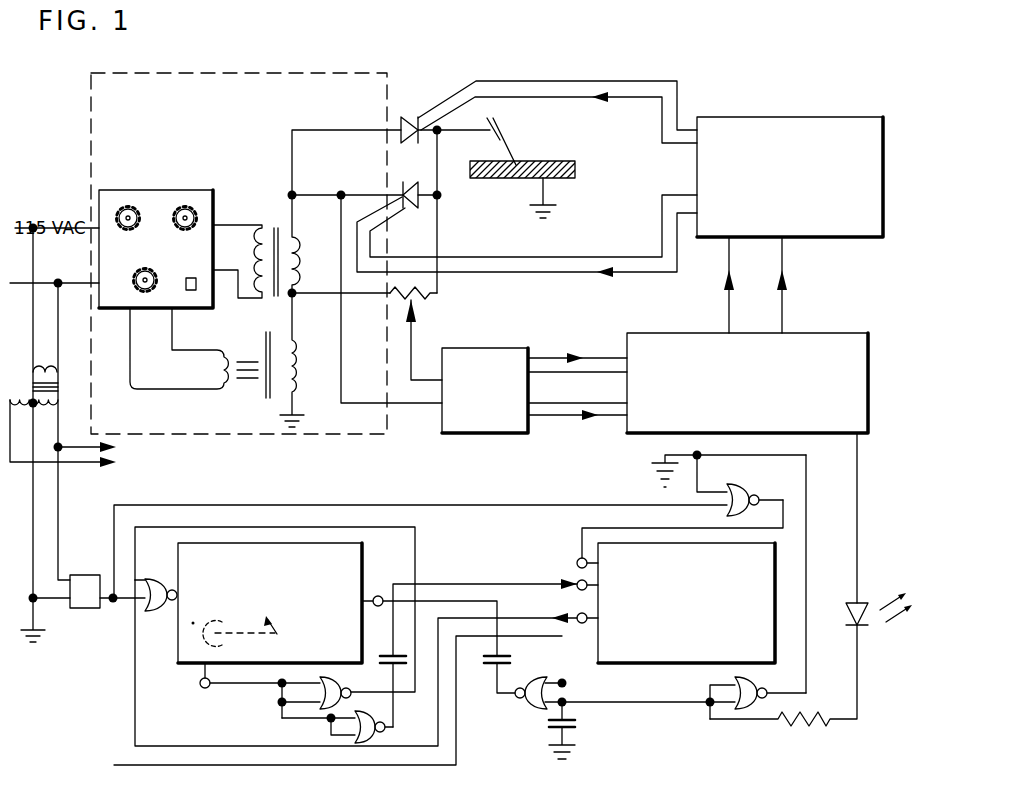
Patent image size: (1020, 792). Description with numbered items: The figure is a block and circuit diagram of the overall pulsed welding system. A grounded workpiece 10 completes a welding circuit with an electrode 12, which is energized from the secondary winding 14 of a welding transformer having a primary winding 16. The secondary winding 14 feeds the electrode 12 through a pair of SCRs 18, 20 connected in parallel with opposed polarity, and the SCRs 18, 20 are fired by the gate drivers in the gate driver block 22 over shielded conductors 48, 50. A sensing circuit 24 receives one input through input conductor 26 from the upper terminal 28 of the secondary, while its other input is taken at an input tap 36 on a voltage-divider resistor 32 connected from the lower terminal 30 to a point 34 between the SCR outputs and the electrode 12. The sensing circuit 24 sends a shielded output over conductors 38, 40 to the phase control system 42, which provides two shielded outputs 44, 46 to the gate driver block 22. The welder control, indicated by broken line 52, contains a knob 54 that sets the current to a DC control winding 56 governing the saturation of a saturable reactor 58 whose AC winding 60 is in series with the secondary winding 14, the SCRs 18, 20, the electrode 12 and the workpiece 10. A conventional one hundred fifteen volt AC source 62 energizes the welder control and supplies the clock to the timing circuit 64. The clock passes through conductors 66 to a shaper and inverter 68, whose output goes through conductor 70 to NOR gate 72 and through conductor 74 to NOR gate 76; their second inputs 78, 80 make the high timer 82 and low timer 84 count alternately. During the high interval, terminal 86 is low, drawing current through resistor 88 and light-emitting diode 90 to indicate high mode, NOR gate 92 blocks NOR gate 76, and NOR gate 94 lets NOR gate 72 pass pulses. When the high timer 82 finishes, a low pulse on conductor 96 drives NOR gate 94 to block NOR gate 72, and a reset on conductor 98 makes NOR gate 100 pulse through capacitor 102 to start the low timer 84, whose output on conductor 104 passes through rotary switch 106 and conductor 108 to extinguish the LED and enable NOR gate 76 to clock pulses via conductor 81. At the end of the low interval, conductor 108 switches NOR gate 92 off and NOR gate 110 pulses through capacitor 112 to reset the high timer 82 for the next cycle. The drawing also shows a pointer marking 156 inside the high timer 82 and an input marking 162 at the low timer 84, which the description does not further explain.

The workpiece 10 is at (560, 161).
The electrode 12 is at (512, 150).
The secondary winding 14 is at (292, 252).
The primary winding 16 is at (270, 228).
The SCR 18 is at (406, 117).
The SCR 20 is at (406, 190).
The gate driver block 22 is at (812, 123).
The sensing circuit 24 is at (492, 350).
The input conductor 26 is at (343, 388).
The upper terminal 28 is at (295, 190).
The lower terminal 30 is at (294, 297).
The resistor 32 is at (432, 298).
The point 34 is at (440, 135).
The input tap 36 is at (412, 348).
The conductor 38 is at (603, 356).
The conductor 40 is at (545, 422).
The phase control system 42 is at (852, 333).
The shielded output 44 is at (733, 303).
The shielded output 46 is at (790, 304).
The shielded conductor 48 is at (530, 95).
The shielded conductor 50 is at (523, 276).
The welder control 52 is at (240, 73).
The knob 54 is at (146, 278).
The DC control winding 56 is at (216, 356).
The saturable reactor 58 is at (262, 395).
The AC winding 60 is at (300, 370).
The 115 volt AC source 62 is at (78, 238).
The timing circuit 64 is at (470, 551).
The conductors 66 is at (33, 492).
The shaper and inverter 68 is at (86, 584).
The conductor 70 is at (123, 578).
The NOR gate 72 is at (160, 579).
The conductor 74 is at (193, 505).
The NOR gate 76 is at (738, 490).
The input 78 is at (290, 527).
The input 80 is at (808, 494).
The conductor 81 is at (622, 527).
The high timer 82 is at (352, 567).
The low timer 84 is at (700, 655).
The terminal 86 is at (707, 706).
The resistor 88 is at (806, 722).
The light-emitting diode 90 is at (866, 603).
The NOR gate 92 is at (742, 712).
The NOR gate 94 is at (318, 698).
The conductor 96 is at (228, 688).
The conductor 98 is at (318, 722).
The NOR gate 100 is at (366, 745).
The capacitor 102 is at (398, 668).
The conductor 104 is at (436, 740).
The rotary switch 106 is at (192, 655).
The conductor 108 is at (457, 730).
The NOR gate 110 is at (528, 708).
The capacitor 112 is at (505, 656).
The high timer adjustment pointer 156 is at (280, 633).
The low timer input 162 is at (590, 621).